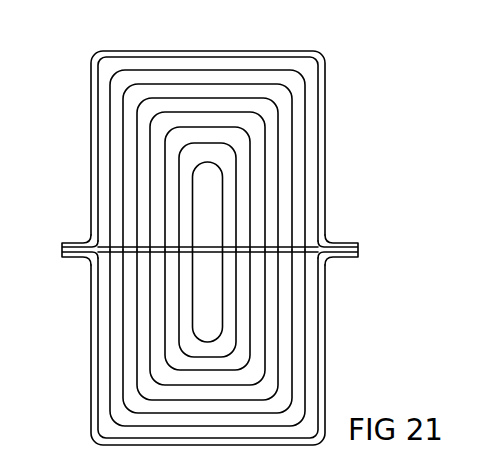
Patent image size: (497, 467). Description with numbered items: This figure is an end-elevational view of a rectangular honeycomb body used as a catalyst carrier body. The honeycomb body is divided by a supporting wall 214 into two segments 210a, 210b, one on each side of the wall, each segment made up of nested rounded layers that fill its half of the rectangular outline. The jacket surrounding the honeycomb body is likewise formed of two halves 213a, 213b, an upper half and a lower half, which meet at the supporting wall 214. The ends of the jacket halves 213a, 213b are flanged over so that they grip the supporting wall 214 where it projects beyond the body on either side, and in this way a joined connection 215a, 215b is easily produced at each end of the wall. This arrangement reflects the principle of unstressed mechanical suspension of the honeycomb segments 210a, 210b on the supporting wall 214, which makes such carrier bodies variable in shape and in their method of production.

The honeycomb body segment 210a is at (209, 88).
The honeycomb body segment 210b is at (203, 405).
The jacket half 213a is at (322, 92).
The jacket half 213b is at (322, 366).
The supporting wall 214 is at (270, 250).
The joined connection 215a is at (358, 250).
The joined connection 215b is at (61, 243).